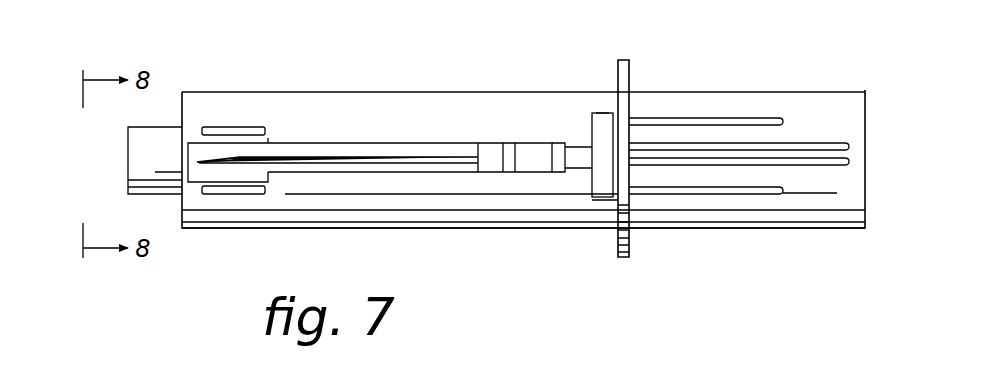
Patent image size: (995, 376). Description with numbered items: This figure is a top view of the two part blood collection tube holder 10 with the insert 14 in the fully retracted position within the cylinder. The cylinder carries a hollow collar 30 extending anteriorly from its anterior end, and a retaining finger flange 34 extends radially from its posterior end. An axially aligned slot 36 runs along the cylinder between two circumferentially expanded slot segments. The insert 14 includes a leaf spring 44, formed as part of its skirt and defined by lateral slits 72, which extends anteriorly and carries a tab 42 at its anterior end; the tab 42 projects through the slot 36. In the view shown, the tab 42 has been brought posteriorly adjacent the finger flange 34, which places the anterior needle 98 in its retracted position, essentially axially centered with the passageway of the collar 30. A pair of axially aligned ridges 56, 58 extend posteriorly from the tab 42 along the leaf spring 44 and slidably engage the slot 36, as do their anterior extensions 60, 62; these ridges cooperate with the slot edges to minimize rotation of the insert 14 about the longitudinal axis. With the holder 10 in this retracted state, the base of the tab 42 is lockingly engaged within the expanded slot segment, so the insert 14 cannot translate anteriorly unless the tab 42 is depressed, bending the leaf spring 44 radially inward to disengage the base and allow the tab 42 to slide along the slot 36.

The blood collection tube holder 10 is at (562, 324).
The insert 14 is at (757, 229).
The hollow collar 30 is at (162, 195).
The retaining finger flange 34 is at (615, 247).
The axially aligned slot 36 is at (342, 149).
The tab 42 is at (599, 110).
The leaf spring 44 is at (700, 135).
The axially aligned ridge 56 is at (783, 147).
The axially aligned ridge 58 is at (807, 168).
The anterior ridge 60 is at (578, 143).
The anterior ridge 62 is at (592, 172).
The slit 72 is at (660, 122).
The anterior needle 98 is at (430, 163).